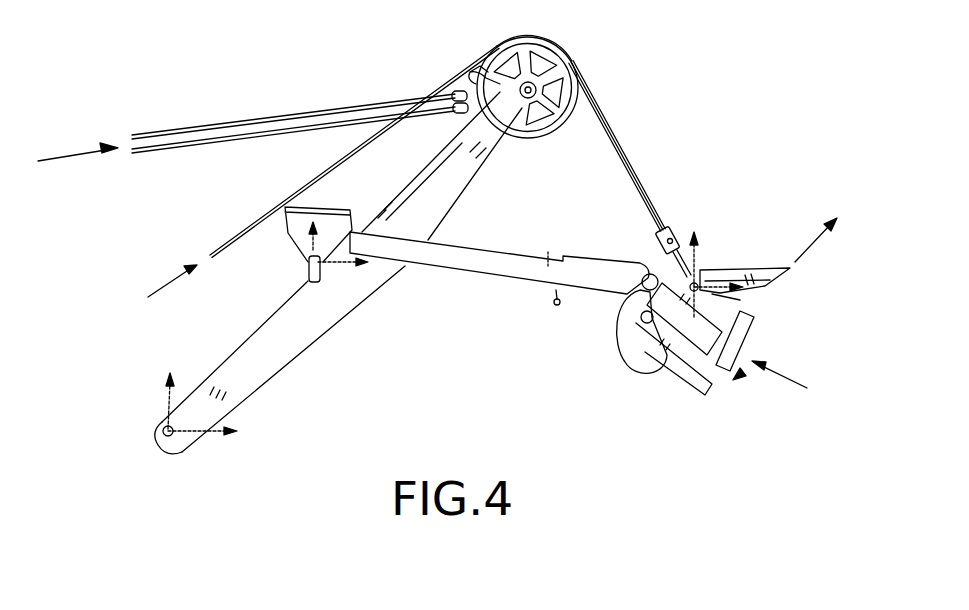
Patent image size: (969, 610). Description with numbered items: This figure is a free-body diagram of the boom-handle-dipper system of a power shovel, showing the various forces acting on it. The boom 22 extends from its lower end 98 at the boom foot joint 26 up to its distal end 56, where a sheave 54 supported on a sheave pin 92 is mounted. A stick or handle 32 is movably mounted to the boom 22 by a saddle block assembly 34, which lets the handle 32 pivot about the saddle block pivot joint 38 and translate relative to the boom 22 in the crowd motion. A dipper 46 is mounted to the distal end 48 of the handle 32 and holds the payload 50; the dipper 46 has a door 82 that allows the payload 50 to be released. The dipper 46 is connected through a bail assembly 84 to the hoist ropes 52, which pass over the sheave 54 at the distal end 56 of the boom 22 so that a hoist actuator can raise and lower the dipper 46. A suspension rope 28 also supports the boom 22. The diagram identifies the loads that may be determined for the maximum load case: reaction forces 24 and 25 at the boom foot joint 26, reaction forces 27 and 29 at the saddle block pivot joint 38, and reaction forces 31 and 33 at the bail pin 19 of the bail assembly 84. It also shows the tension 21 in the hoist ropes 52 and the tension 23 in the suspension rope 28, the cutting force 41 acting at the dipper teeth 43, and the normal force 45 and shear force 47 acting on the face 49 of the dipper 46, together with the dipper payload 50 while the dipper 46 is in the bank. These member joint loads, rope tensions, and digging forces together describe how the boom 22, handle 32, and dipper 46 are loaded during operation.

The bail pin 19 is at (684, 319).
The tension in the hoist rope 21 is at (150, 268).
The boom 22 is at (485, 165).
The tension in the suspension rope 23 is at (58, 156).
The reaction force 24 is at (185, 396).
The reaction force 25 is at (208, 438).
The boom foot joint 26 is at (160, 442).
The reaction force 27 is at (332, 232).
The suspension rope 28 is at (233, 128).
The reaction force 29 is at (332, 282).
The reaction force 31 is at (703, 237).
The handle 32 is at (505, 244).
The reaction force 33 is at (780, 297).
The saddle block assembly 34 is at (300, 248).
The saddle block pivot joint 38 is at (308, 275).
The cutting force 41 is at (822, 245).
The dipper teeth 43 is at (790, 277).
The normal force 45 is at (806, 386).
The dipper 46 is at (753, 310).
The shear force 47 is at (743, 375).
The distal end of handle 48 is at (634, 266).
The face of dipper 49 is at (752, 323).
The payload 50 is at (757, 270).
The hoist rope 52 is at (245, 228).
The sheave 54 is at (562, 50).
The distal end of boom 56 is at (450, 140).
The door 82 is at (632, 370).
The bail assembly 84 is at (700, 263).
The sheave pin 92 is at (520, 86).
The lower end of boom 98 is at (163, 424).